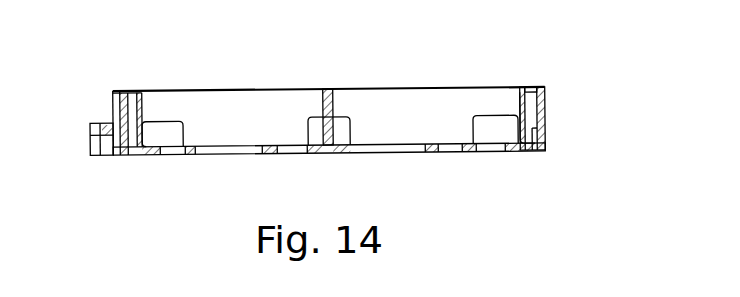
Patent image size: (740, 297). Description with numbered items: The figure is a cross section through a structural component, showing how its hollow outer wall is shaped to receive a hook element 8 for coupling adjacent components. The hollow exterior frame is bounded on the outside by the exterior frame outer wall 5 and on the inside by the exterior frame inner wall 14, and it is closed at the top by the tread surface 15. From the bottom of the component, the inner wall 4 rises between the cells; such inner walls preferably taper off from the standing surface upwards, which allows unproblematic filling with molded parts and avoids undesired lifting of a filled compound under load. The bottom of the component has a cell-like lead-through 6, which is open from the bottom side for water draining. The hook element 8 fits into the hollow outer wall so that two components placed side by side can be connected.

The inner wall 4 is at (323, 99).
The exterior frame outer wall 5 is at (546, 107).
The cell-like lead-through 6 is at (425, 149).
The hook element 8 is at (95, 152).
The exterior frame inner wall 14 is at (518, 96).
The tread surface 15 is at (532, 89).